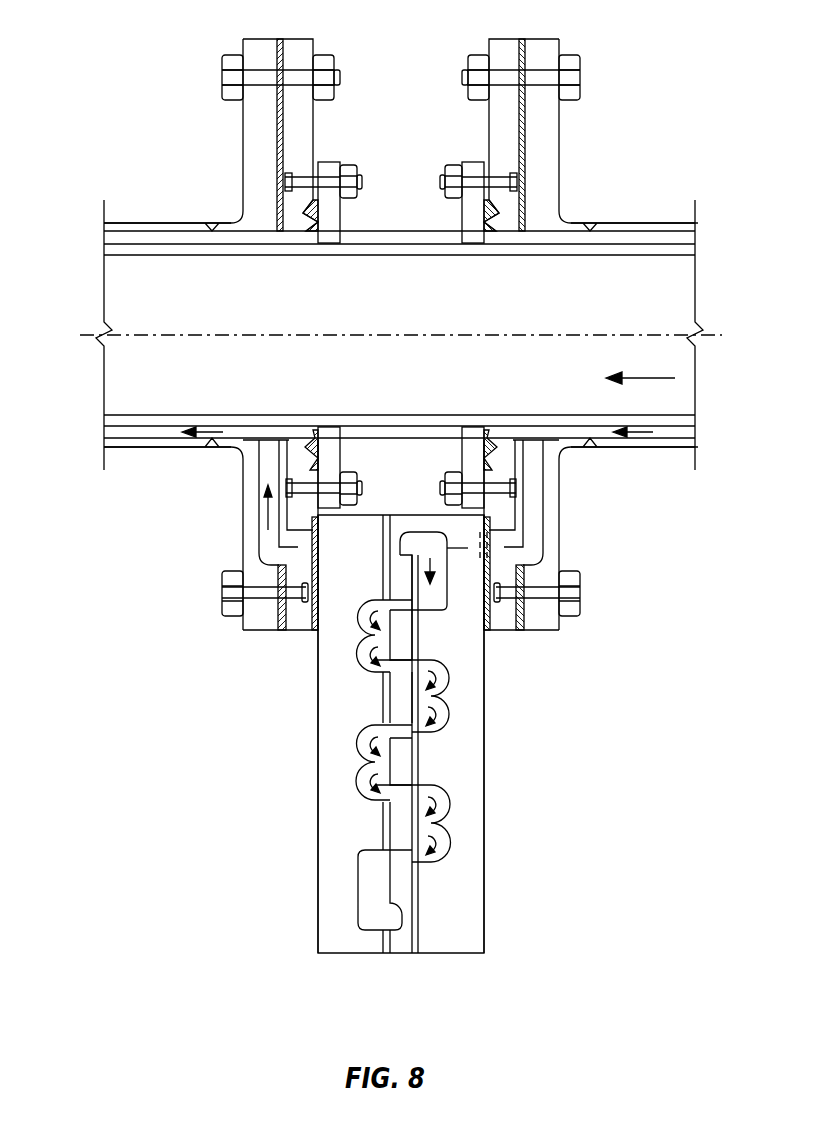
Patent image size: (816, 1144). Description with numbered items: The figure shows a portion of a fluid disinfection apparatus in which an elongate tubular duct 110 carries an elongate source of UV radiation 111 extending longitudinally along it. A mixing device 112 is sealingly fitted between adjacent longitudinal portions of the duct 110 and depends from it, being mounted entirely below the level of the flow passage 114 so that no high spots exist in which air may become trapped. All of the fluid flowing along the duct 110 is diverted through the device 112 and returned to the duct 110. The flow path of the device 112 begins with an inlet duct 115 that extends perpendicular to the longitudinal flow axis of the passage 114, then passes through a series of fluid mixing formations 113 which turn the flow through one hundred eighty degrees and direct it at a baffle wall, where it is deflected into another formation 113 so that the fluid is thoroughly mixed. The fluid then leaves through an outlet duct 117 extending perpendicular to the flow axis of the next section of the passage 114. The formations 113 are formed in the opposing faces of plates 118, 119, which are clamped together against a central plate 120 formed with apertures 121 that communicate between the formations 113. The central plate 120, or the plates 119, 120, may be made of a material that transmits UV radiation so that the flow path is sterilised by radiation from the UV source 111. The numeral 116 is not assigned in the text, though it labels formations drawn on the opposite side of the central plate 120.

The elongate tubular duct 110 is at (132, 228).
The elongate source of UV radiation 111 is at (130, 372).
The mixing device 112 is at (636, 741).
The fluid mixing formation 113 is at (447, 697).
The flow passage 114 is at (153, 432).
The inlet duct 115 is at (532, 518).
The left vortex chamber 116 is at (392, 632).
The outlet duct 117 is at (267, 467).
The plate 118 is at (445, 945).
The plate 119 is at (343, 945).
The central plate 120 is at (402, 945).
The aperture 121 is at (390, 853).